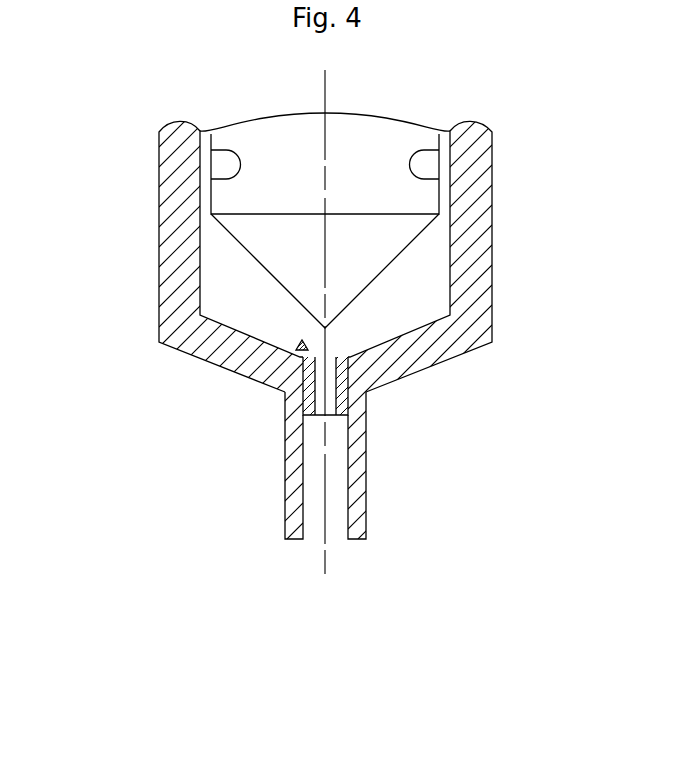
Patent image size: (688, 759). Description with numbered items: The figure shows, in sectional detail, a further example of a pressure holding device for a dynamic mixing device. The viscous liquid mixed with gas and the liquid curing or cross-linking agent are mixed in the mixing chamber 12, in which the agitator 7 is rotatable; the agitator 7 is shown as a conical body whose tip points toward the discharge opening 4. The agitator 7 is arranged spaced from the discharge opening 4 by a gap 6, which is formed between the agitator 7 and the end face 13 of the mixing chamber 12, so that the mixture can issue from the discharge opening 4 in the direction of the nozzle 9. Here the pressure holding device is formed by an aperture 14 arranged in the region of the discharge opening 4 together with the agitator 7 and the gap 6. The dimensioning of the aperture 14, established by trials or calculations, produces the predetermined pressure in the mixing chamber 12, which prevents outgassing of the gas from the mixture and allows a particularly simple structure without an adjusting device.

The discharge opening 4 is at (300, 344).
The gap 6 is at (411, 289).
The agitator 7 is at (413, 194).
The nozzle 9 is at (366, 475).
The mixing chamber 12 is at (435, 236).
The end face 13 is at (408, 332).
The aperture 14 is at (341, 392).